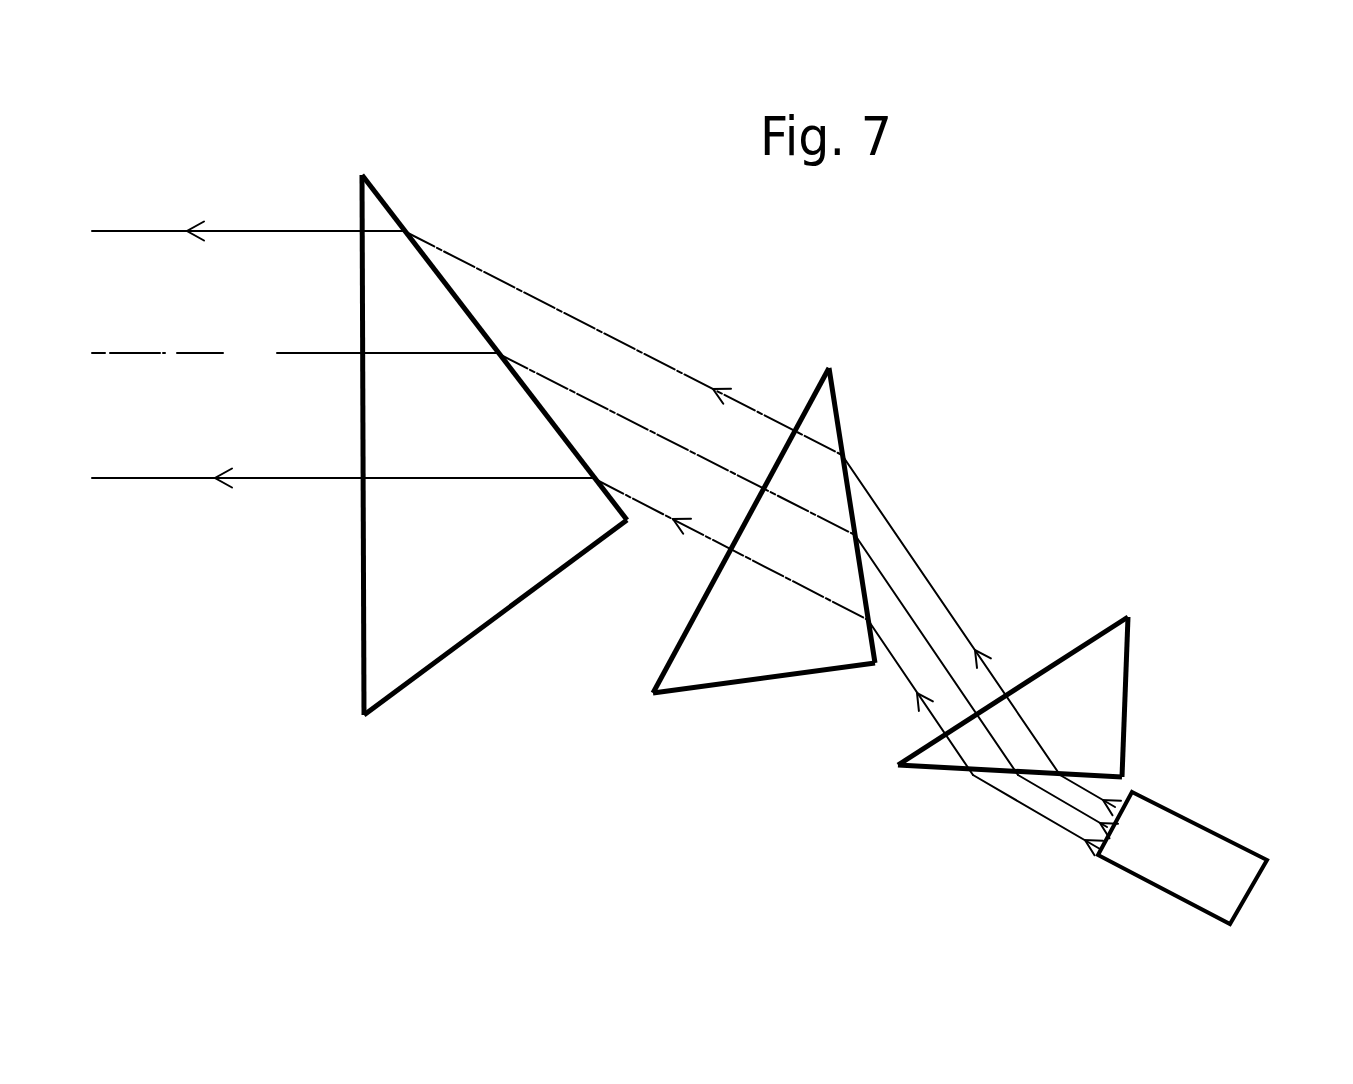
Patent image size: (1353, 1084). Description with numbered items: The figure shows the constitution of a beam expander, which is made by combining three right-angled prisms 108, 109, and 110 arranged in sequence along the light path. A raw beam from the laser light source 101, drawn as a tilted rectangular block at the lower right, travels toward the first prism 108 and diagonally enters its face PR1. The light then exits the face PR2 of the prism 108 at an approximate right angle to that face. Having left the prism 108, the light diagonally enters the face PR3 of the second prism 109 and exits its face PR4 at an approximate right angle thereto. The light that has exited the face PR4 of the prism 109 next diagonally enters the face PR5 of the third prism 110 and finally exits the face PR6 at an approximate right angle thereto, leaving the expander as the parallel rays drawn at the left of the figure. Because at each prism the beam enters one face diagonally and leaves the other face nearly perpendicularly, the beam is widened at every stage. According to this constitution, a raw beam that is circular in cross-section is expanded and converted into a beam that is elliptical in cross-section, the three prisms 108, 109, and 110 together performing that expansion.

The right-angled prism 110 is at (446, 384).
The right-angled prism 109 is at (795, 474).
The right-angled prism 108 is at (1036, 670).
The laser light source 101 is at (1251, 850).
The face PR1 is at (930, 768).
The face PR2 is at (1088, 641).
The face PR3 is at (840, 424).
The face PR4 is at (805, 398).
The face PR5 is at (383, 200).
The face PR6 is at (356, 218).